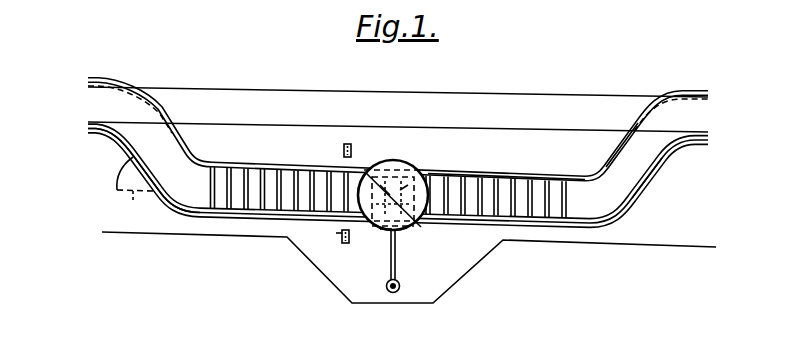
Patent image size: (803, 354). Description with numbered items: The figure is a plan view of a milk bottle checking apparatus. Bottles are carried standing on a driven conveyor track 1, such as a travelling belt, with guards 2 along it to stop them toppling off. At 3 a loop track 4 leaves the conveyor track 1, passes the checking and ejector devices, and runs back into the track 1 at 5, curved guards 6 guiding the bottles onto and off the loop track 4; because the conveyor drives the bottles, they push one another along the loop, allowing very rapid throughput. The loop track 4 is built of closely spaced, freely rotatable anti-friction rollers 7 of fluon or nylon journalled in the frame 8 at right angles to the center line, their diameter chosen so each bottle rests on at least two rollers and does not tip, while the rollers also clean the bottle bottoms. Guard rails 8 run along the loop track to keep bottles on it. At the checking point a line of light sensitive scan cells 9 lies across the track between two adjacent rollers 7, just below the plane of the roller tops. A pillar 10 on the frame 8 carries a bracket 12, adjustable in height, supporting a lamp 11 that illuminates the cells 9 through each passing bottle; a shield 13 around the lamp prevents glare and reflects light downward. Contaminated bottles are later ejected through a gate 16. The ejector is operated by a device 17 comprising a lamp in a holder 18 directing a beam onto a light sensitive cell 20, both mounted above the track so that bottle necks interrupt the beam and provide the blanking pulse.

The driven conveyor track 1 is at (694, 110).
The guards 2 is at (668, 167).
The loop track departure point 3 is at (638, 203).
The loop track 4 is at (494, 180).
The loop track return point 5 is at (146, 202).
The curved guards 6 is at (118, 143).
The anti-friction rollers 7 is at (268, 205).
The frame 8 is at (462, 260).
The light sensitive scan cells 9 is at (383, 230).
The pillar 10 is at (392, 293).
The lamp 11 is at (432, 164).
The bracket 12 is at (398, 259).
The shield 13 is at (410, 164).
The gate 16 is at (133, 197).
The ejector operating device 17 is at (346, 245).
The holder 18 is at (340, 234).
The light sensitive cell 20 is at (344, 150).